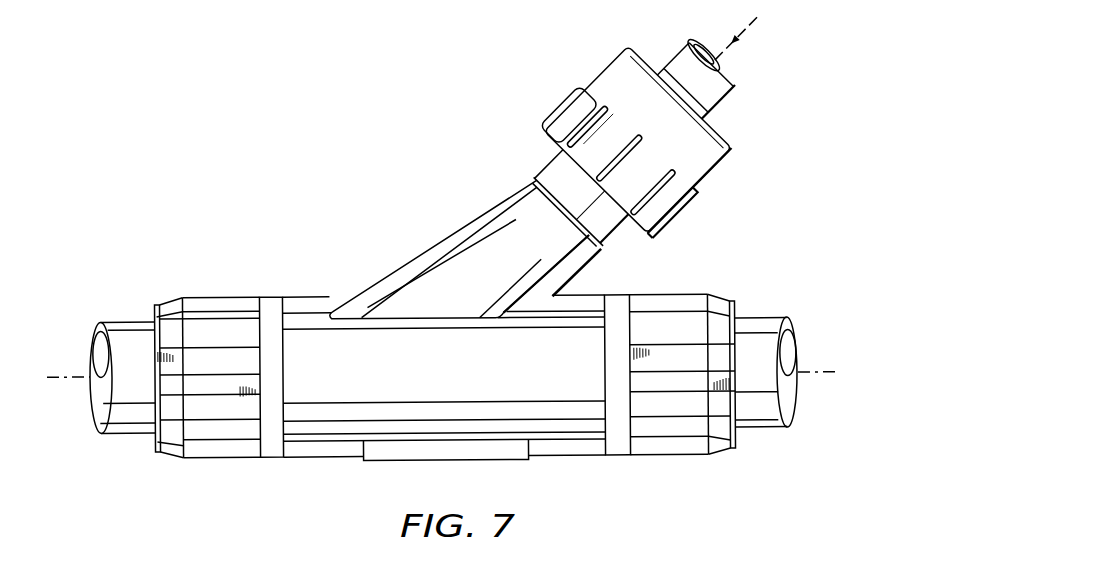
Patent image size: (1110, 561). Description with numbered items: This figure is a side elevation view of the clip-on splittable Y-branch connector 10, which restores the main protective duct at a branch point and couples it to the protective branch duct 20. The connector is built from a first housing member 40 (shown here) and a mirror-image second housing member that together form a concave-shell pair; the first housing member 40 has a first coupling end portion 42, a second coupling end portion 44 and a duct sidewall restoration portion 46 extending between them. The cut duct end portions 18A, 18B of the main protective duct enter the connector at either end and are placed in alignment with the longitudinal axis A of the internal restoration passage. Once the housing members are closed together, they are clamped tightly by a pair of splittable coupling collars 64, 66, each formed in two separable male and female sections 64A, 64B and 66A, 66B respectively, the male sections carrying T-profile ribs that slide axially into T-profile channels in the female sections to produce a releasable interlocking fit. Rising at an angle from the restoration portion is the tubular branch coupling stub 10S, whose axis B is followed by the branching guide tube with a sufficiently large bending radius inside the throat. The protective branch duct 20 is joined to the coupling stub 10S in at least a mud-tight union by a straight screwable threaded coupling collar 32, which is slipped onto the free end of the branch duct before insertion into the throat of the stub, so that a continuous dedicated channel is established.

The splittable Y-branch connector 10 is at (378, 221).
The tubular branch coupling stub 10S is at (482, 209).
The cut duct end portion 18A is at (122, 319).
The cut duct end portion 18B is at (766, 318).
The protective branch duct 20 is at (727, 102).
The threaded coupling collar 32 is at (557, 110).
The first housing member 40 is at (321, 468).
The first coupling end portion 42 is at (272, 294).
The second coupling end portion 44 is at (622, 455).
The duct sidewall restoration portion 46 is at (457, 378).
The splittable coupling collar 64 is at (199, 288).
The male collar section 64A is at (228, 294).
The female collar section 64B is at (213, 459).
The splittable coupling collar 66 is at (692, 283).
The male collar section 66A is at (657, 294).
The female collar section 66B is at (678, 455).
The longitudinal axis A is at (58, 373).
The axis of the branch stub B is at (752, 42).